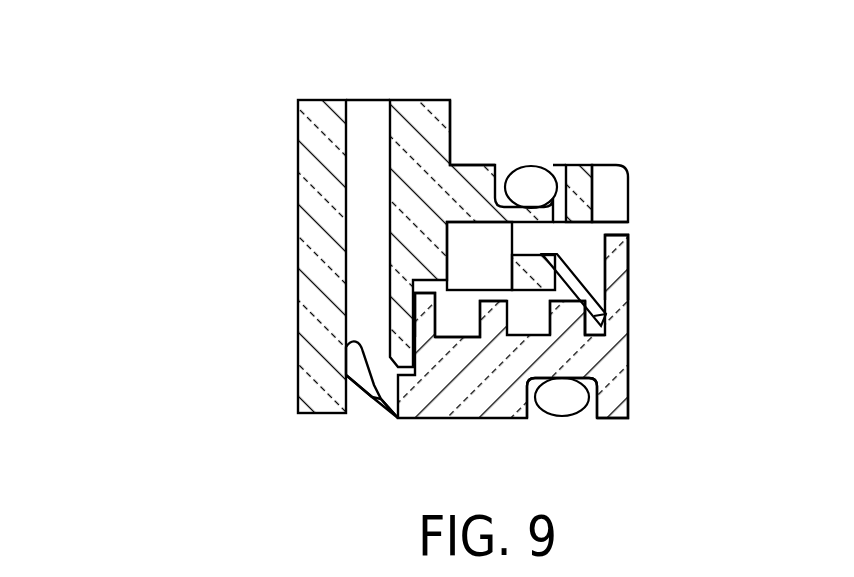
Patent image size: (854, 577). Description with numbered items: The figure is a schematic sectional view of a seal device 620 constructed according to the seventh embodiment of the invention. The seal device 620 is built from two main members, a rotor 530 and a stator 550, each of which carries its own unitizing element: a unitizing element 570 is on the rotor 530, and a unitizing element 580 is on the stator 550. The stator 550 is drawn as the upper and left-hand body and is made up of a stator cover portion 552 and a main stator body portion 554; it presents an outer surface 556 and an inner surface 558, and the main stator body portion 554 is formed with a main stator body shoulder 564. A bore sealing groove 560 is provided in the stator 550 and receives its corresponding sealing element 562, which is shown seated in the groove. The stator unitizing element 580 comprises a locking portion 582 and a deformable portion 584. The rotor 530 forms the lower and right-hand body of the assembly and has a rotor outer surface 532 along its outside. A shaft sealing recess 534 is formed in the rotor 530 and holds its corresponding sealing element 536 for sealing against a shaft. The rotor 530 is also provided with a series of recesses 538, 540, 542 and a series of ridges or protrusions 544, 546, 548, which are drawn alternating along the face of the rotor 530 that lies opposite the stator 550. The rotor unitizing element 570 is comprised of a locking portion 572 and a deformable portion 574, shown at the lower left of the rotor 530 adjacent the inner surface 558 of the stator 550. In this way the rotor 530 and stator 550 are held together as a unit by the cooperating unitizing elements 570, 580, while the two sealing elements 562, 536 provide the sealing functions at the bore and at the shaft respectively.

The seal device 620 is at (166, 68).
The stator 550 is at (274, 223).
The stator cover portion 552 is at (310, 162).
The main stator body portion 554 is at (425, 133).
The outer surface 556 is at (300, 260).
The inner surface 558 is at (300, 405).
The bore sealing groove 560 is at (554, 208).
The sealing element 562 is at (532, 180).
The main stator body shoulder 564 is at (451, 127).
The unitizing element 570 is at (370, 405).
The locking portion 572 is at (355, 368).
The deformable portion 574 is at (378, 402).
The unitizing element 580 is at (578, 266).
The locking portion 582 is at (618, 303).
The deformable portion 584 is at (565, 250).
The recess 540 is at (598, 305).
The recess 542 is at (598, 326).
The ridge or protrusion 544 is at (420, 315).
The ridge or protrusion 546 is at (585, 395).
The ridge or protrusion 548 is at (575, 345).
The rotor 530 is at (569, 359).
The rotor outer surface 532 is at (628, 398).
The shaft sealing recess 534 is at (590, 390).
The sealing element 536 is at (560, 403).
The recess 538 is at (455, 315).